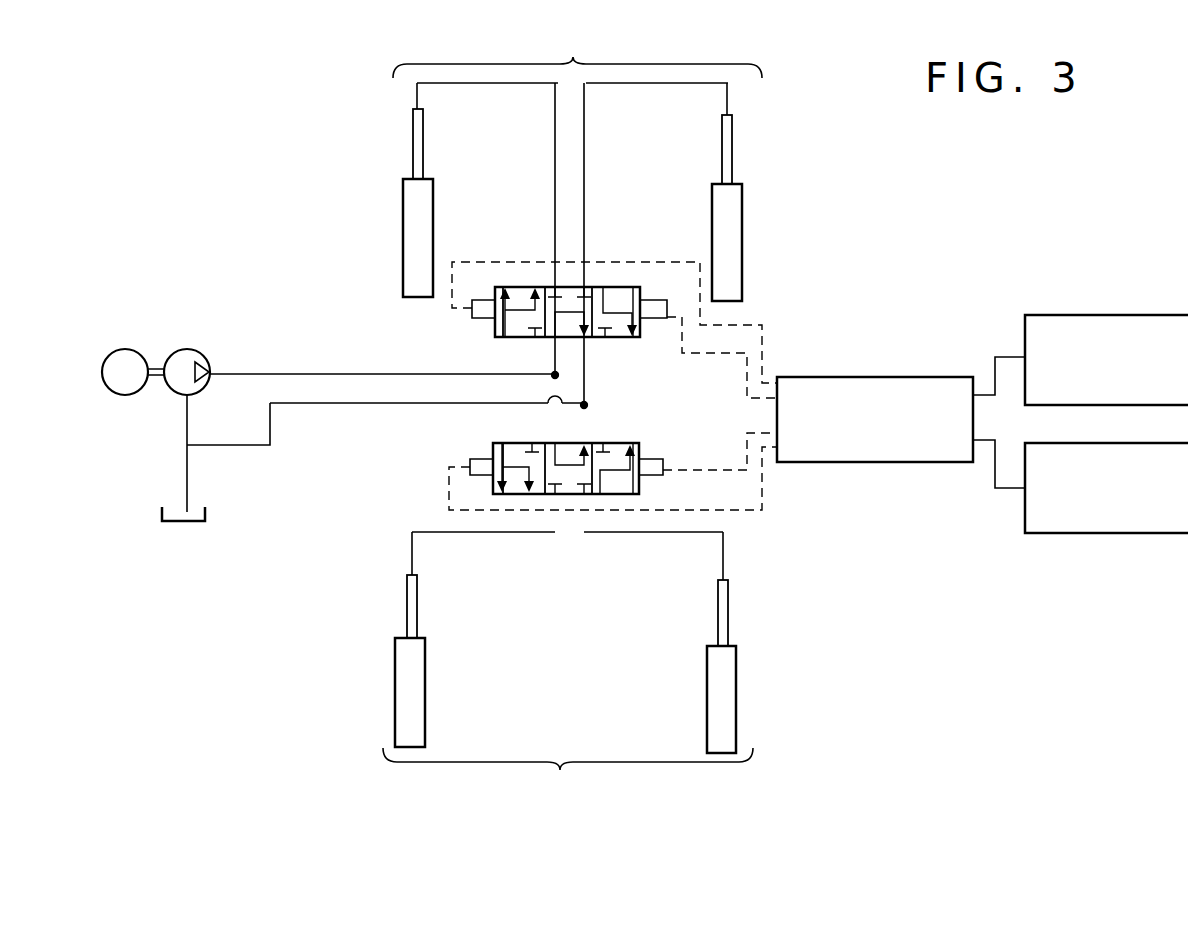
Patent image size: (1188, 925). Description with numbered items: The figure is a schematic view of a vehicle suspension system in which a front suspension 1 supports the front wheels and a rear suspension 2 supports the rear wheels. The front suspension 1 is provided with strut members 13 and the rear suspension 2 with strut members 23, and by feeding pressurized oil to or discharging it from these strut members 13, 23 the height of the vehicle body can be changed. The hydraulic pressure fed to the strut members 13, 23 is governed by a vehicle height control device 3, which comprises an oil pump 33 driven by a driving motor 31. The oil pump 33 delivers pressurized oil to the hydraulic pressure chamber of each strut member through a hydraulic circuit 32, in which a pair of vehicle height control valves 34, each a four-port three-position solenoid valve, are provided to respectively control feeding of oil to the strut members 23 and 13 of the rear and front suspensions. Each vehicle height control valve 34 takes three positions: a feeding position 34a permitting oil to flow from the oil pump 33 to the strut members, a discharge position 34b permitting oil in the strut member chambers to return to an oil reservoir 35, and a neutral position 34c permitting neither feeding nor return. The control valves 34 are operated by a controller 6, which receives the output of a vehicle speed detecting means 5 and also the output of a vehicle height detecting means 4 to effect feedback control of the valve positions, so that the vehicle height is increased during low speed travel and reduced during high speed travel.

The front suspension 1 is at (577, 53).
The rear suspension 2 is at (568, 776).
The vehicle height control device 3 is at (326, 344).
The vehicle height detecting means 4 is at (1140, 315).
The vehicle speed detecting means 5 is at (1145, 534).
The controller 6 is at (916, 463).
The strut member 13 is at (403, 205).
The strut member 23 is at (395, 675).
The driving motor 31 is at (130, 348).
The hydraulic circuit 32 is at (392, 400).
The oil pump 33 is at (195, 350).
The vehicle height control valve 34 is at (600, 343).
The feeding position 34a is at (516, 287).
The discharge position 34b is at (622, 287).
The neutral position 34c is at (572, 287).
The oil reservoir 35 is at (207, 518).